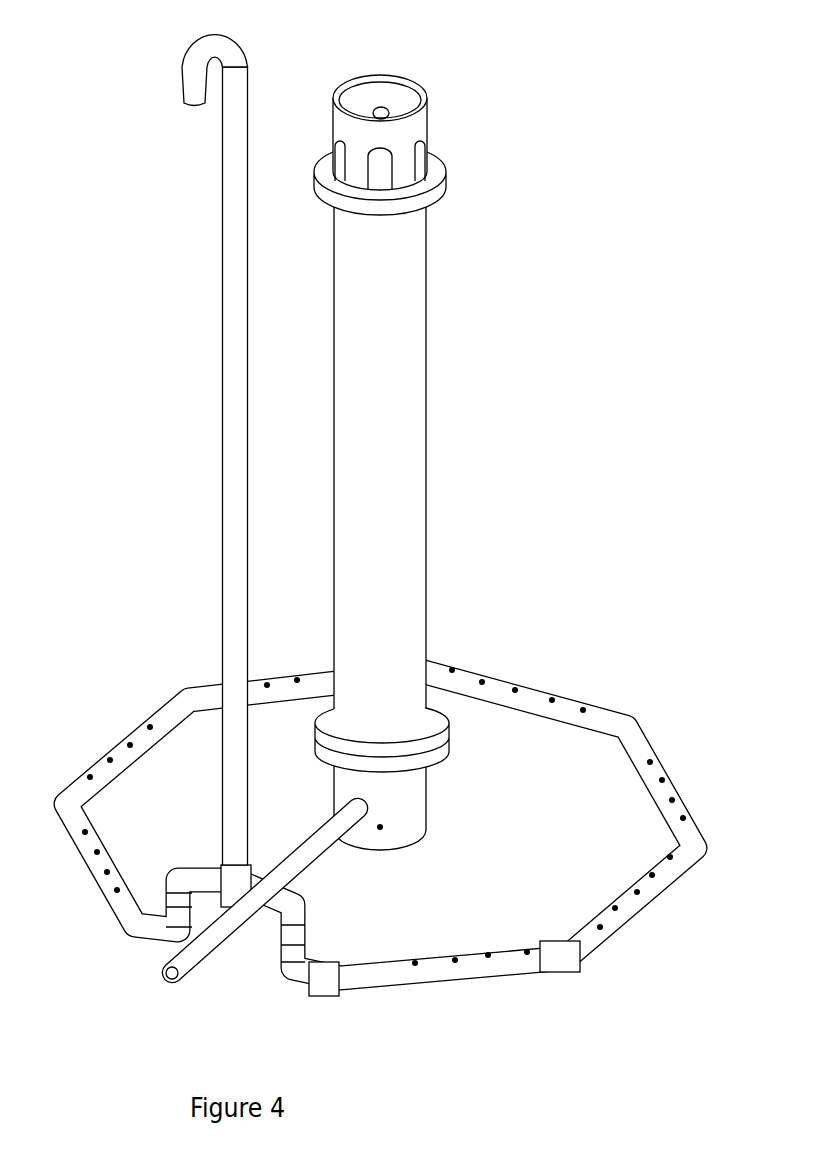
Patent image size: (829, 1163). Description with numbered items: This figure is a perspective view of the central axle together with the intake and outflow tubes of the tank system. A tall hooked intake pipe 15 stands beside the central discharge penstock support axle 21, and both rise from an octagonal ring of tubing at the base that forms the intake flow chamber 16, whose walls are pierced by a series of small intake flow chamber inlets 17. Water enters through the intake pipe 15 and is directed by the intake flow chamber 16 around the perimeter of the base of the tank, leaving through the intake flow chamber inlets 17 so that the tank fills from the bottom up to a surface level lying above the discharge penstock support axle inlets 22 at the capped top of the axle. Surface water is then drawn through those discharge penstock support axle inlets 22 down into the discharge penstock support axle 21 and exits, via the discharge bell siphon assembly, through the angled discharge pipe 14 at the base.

The discharge pipe 14 is at (225, 919).
The intake pipe 15 is at (162, 450).
The intake flow chamber 16 is at (392, 819).
The intake flow chamber inlets 17 is at (444, 991).
The discharge penstock support axle 21 is at (425, 525).
The discharge penstock support axle inlets 22 is at (416, 143).